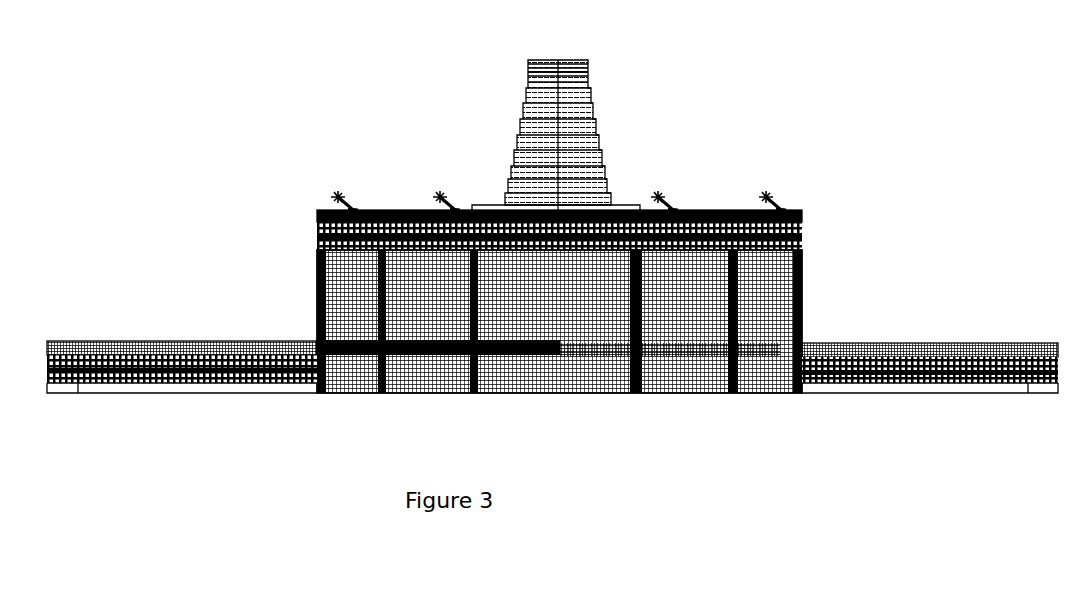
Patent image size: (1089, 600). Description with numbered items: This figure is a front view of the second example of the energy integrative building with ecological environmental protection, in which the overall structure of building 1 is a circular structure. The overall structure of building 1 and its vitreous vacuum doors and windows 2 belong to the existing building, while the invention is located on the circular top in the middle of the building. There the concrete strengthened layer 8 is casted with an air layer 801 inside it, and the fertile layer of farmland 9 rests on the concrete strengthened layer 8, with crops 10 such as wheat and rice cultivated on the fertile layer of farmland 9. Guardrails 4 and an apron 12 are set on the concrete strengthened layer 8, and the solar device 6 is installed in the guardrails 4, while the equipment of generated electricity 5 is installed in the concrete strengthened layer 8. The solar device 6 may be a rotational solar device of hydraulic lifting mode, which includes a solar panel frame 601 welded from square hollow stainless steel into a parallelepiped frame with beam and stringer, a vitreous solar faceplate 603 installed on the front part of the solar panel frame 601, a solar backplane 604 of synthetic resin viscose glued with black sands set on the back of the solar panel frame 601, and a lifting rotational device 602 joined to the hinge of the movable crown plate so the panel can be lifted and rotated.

The overall structure of building 1 is at (313, 332).
The doors and windows 2 is at (313, 313).
The guardrails 4 is at (317, 228).
The equipment of generated electricity 5 is at (347, 196).
The solar device 6 is at (338, 210).
The concrete strengthened layer on the top of building 8 is at (528, 64).
The air layer 801 is at (528, 72).
The fertile layer of farmland 9 is at (317, 236).
The crops 10 is at (317, 232).
The apron 12 is at (528, 62).
The solar panel frame 601 is at (723, 210).
The lifting rotational device 602 is at (690, 210).
The solar faceplate 603 is at (753, 210).
The solar backplane 604 is at (678, 210).